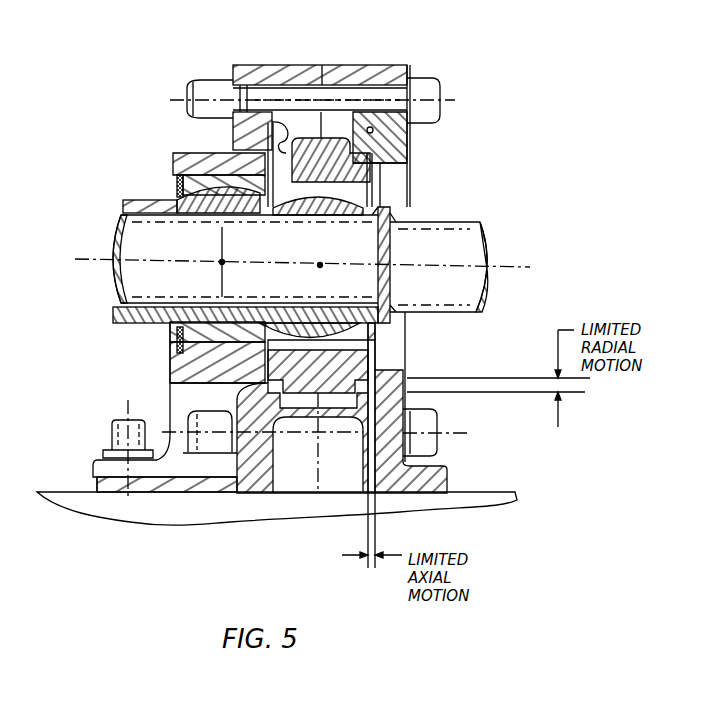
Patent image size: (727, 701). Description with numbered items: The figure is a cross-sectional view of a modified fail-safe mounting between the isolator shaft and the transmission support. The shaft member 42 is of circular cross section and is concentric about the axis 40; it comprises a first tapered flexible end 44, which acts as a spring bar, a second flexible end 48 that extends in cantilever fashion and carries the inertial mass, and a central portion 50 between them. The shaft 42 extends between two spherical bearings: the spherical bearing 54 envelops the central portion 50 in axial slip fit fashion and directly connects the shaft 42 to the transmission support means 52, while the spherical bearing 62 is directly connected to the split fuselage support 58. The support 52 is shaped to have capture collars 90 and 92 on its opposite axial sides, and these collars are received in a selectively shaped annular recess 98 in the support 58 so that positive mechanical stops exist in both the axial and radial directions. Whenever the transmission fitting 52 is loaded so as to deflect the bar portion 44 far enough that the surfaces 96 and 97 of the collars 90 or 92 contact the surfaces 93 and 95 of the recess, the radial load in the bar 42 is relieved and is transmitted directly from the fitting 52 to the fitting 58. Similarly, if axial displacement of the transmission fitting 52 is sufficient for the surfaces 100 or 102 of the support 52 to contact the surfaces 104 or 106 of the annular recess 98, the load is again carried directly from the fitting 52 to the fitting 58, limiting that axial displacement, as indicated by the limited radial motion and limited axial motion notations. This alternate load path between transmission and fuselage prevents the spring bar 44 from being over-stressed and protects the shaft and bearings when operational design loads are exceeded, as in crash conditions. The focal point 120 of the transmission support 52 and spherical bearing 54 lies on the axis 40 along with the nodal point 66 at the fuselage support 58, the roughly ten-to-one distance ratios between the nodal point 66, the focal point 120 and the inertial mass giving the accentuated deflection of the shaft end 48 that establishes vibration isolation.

The axis 40 is at (510, 267).
The shaft member 42 is at (443, 237).
The first tapered flexible end 44 is at (477, 234).
The second flexible end 48 is at (112, 284).
The central portion 50 is at (291, 294).
The transmission support means 52 is at (328, 173).
The spherical bearing 54 is at (328, 211).
The fuselage support member 58 is at (341, 72).
The spherical bearing 62 is at (228, 208).
The nodal point 66 is at (222, 262).
The capture collar 90 is at (210, 163).
The capture collar 92 is at (380, 175).
The annular recess surface 93 is at (268, 134).
The annular recess surface 95 is at (407, 132).
The collar surface 96 is at (270, 152).
The collar surface 97 is at (400, 162).
The annular recess 98 is at (378, 150).
The support surface 100 is at (173, 355).
The support surface 102 is at (372, 353).
The annular recess surface 104 is at (263, 383).
The annular recess surface 106 is at (375, 358).
The focal point 120 is at (320, 265).